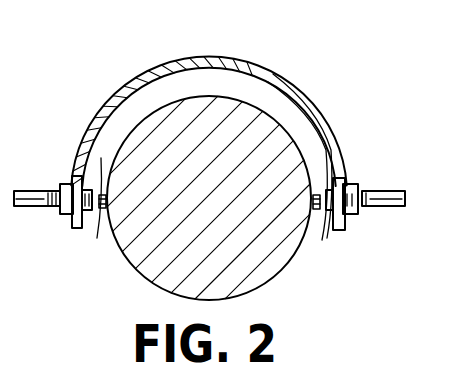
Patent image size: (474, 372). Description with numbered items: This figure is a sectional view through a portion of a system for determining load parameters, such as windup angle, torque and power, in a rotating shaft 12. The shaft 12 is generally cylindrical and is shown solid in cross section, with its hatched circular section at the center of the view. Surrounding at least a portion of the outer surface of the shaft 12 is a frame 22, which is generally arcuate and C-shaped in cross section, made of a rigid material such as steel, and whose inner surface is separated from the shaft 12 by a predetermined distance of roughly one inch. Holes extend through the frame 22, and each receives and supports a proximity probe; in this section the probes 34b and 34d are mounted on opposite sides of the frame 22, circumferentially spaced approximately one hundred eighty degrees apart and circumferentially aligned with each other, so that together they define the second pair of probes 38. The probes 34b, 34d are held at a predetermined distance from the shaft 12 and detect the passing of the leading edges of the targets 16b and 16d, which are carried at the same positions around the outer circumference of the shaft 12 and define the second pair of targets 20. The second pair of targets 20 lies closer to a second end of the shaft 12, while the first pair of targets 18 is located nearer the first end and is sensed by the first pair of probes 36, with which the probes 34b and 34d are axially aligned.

The rotating shaft 12 is at (152, 256).
The frame 22 is at (196, 58).
The first pair of targets 18 is at (89, 151).
The second pair of targets 20 is at (330, 148).
The first pair of probes 36 is at (37, 191).
The second pair of probes 38 is at (380, 191).
The probe 34b is at (37, 208).
The probe 34d is at (385, 208).
The target 16b is at (101, 209).
The target 16d is at (318, 210).